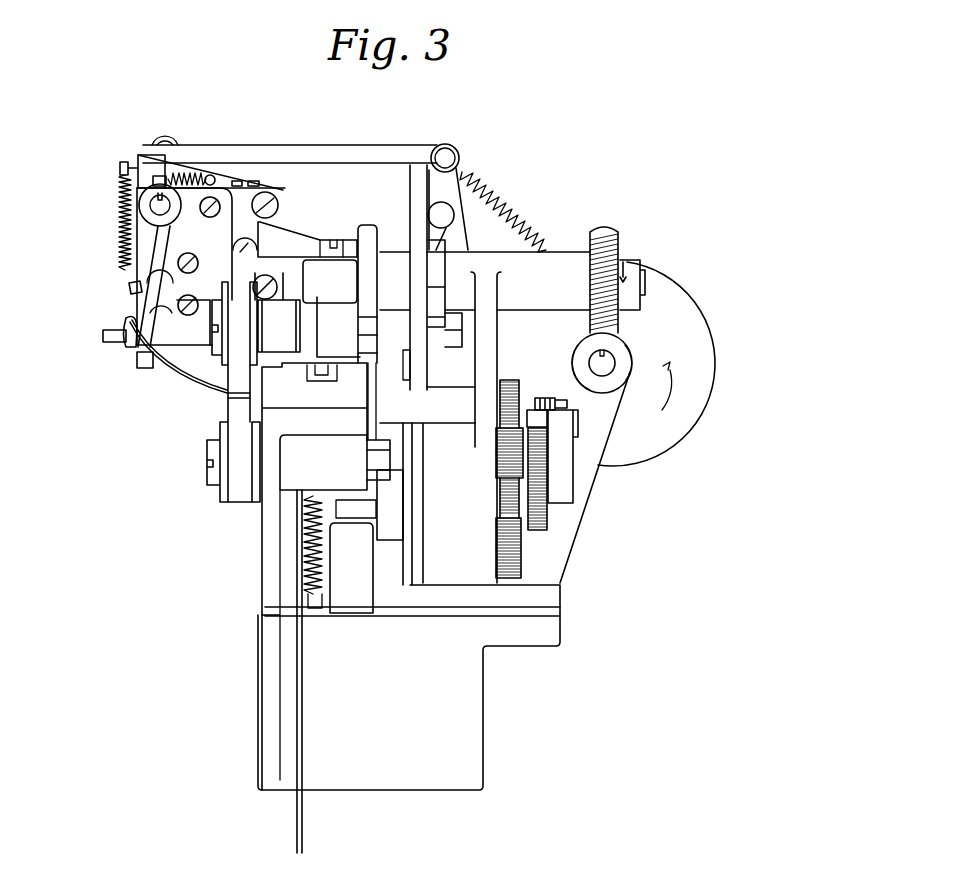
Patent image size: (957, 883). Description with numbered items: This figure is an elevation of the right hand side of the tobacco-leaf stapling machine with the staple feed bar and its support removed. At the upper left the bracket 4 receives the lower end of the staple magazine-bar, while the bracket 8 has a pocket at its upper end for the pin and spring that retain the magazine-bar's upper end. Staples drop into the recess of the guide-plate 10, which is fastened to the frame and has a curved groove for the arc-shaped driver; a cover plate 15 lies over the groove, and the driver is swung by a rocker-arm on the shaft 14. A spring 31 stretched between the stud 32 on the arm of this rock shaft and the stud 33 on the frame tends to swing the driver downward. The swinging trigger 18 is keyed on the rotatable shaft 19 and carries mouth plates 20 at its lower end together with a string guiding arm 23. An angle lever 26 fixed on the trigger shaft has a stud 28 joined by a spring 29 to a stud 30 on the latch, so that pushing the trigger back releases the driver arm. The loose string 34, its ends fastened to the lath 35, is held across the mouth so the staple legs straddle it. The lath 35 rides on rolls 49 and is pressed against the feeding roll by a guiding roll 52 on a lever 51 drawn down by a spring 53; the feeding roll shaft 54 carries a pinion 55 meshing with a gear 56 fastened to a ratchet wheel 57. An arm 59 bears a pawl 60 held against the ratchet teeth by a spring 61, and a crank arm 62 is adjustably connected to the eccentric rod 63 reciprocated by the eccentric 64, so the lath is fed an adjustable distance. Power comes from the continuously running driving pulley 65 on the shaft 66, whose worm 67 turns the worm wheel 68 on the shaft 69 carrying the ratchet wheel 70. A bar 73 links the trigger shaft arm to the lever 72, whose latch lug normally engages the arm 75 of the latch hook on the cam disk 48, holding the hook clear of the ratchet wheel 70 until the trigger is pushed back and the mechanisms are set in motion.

The bracket 4 is at (308, 240).
The bracket 8 is at (306, 410).
The guide-plate 10 is at (279, 195).
The shaft 14 is at (170, 279).
The cover plate 15 is at (190, 330).
The swinging trigger 18 is at (140, 312).
The rotatable shaft 19 is at (168, 213).
The mouth plates 20 is at (150, 366).
The string guiding arm 23 is at (125, 350).
The angle lever 26 is at (189, 172).
The stud 28 is at (211, 176).
The spring 29 is at (176, 145).
The stud 30 is at (155, 176).
The spring 31 is at (119, 219).
The stud 32 is at (130, 287).
The stud 33 is at (120, 166).
The string 34 is at (188, 386).
The lath 35 is at (226, 407).
The disk 48 is at (410, 202).
The rolls 49 is at (220, 505).
The lever 51 is at (287, 302).
The guiding roll 52 is at (235, 352).
The spring 53 is at (316, 567).
The shaft 54 is at (393, 440).
The pinion 55 is at (503, 456).
The gear 56 is at (513, 540).
The ratchet wheel 57 is at (538, 512).
The arm 59 is at (563, 472).
The pawl 60 is at (538, 410).
The spring 61 is at (547, 397).
The crank arm 62 is at (390, 542).
The eccentric rod 63 is at (375, 368).
The eccentric 64 is at (380, 262).
The driving pulley 65 is at (700, 398).
The shaft 66 is at (612, 372).
The worm 67 is at (622, 350).
The worm wheel 68 is at (620, 240).
The shaft 69 is at (640, 282).
The ratchet wheel 70 is at (448, 268).
The lever 72 is at (456, 196).
The bar 73 is at (336, 147).
The arm 75 is at (440, 340).